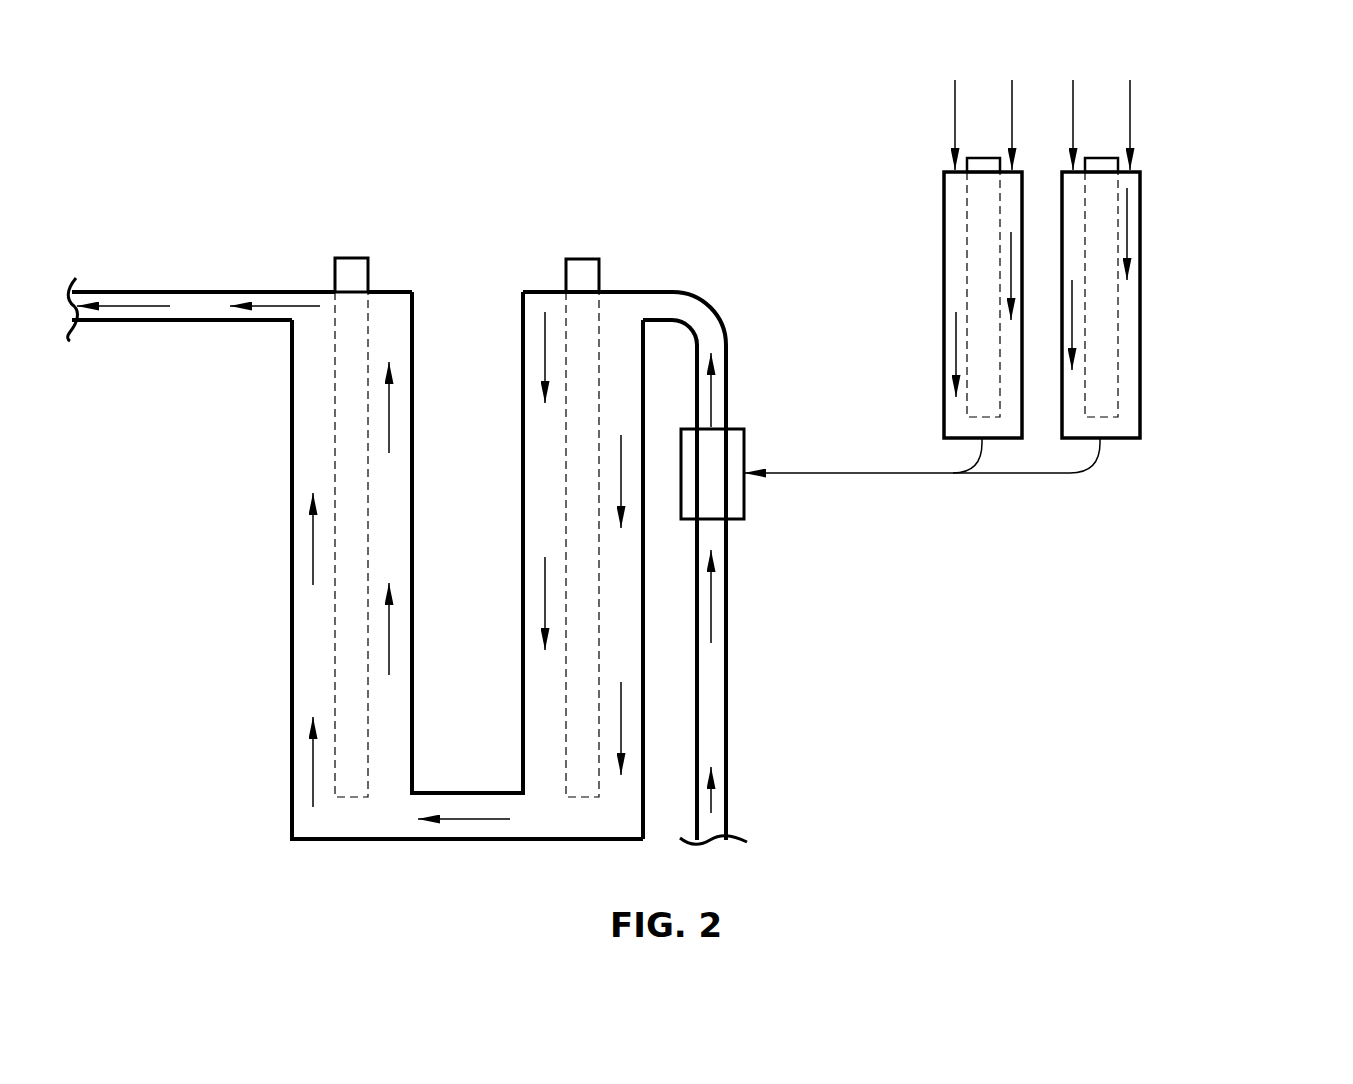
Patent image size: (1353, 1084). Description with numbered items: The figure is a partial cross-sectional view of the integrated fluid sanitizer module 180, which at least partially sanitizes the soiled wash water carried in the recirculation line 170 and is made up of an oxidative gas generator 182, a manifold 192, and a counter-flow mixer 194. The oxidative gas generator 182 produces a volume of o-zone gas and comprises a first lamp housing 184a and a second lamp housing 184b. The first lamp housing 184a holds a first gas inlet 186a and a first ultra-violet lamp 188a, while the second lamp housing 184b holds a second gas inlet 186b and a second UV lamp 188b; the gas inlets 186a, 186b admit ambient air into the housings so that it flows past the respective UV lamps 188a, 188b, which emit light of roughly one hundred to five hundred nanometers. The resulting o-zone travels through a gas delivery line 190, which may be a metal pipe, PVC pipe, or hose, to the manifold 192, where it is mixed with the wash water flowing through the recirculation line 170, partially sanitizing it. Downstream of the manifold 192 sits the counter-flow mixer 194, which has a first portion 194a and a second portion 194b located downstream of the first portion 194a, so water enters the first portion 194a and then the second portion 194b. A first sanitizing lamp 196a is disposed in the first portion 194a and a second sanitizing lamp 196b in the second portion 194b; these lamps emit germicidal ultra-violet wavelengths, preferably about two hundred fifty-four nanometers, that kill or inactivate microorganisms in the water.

The recirculation line 170 is at (110, 292).
The integrated fluid sanitizer module 180 is at (519, 448).
The oxidative gas generator 182 is at (1045, 304).
The first lamp housing 184a is at (1159, 259).
The second lamp housing 184b is at (925, 259).
The first gas inlet 186a is at (1130, 170).
The second gas inlet 186b is at (953, 170).
The first ultra-violet lamp 188a is at (1102, 318).
The second ultra-violet lamp 188b is at (985, 305).
The gas delivery line 190 is at (907, 474).
The manifold 192 is at (747, 521).
The counter-flow mixer 194 is at (413, 485).
The first portion 194a is at (523, 400).
The second portion 194b is at (292, 400).
The first sanitizing lamp 196a is at (582, 467).
The second sanitizing lamp 196b is at (350, 467).